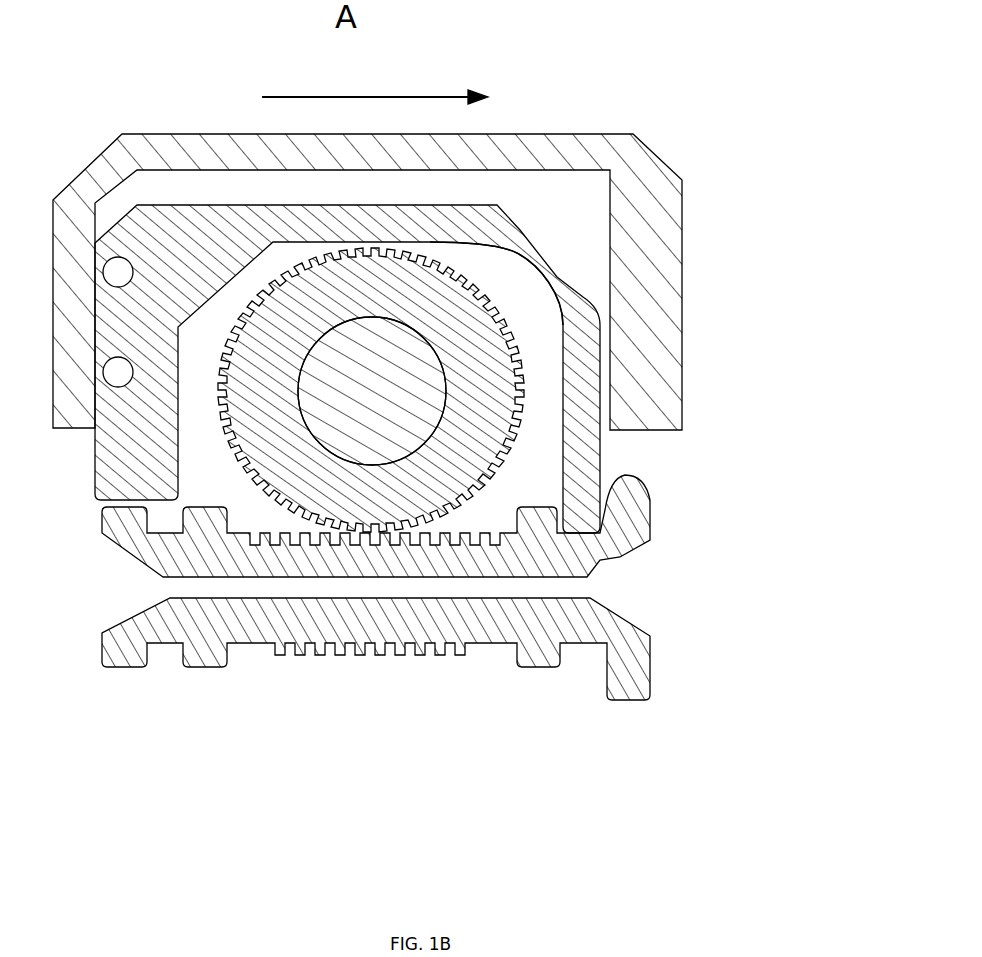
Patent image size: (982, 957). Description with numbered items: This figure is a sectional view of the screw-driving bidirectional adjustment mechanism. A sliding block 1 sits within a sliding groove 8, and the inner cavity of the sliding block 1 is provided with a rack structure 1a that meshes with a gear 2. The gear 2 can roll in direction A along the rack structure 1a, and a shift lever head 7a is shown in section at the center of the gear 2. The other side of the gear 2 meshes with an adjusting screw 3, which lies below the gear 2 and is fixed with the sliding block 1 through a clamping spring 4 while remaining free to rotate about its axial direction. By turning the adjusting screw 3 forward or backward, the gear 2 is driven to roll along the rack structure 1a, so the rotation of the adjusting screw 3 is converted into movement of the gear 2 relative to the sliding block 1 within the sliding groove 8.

The sliding groove 8 is at (666, 168).
The sliding block 1 is at (599, 456).
The rack structure 1a is at (500, 253).
The gear 2 is at (525, 399).
The shift lever head 7a is at (328, 444).
The adjusting screw 3 is at (598, 621).
The clamping spring 4 is at (434, 663).